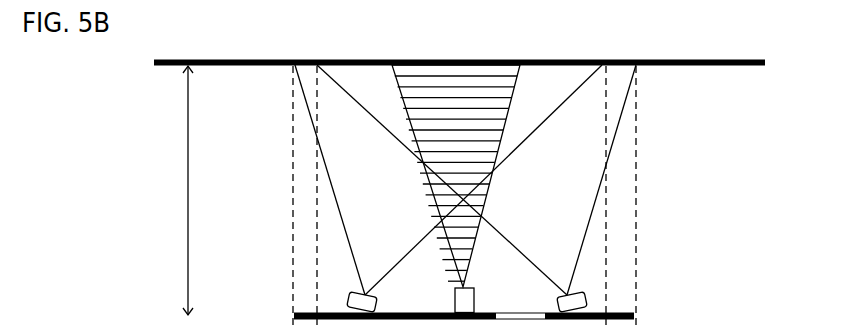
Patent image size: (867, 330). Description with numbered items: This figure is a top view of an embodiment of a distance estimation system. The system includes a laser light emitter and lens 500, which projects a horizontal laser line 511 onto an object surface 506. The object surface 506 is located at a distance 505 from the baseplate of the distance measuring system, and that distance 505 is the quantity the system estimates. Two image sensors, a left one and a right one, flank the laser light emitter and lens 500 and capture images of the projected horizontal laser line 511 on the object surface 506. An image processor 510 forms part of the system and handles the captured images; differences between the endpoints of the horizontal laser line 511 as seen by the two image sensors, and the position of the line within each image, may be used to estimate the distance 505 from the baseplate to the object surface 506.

The laser light emitter and lens 500 is at (453, 298).
The distance 505 is at (170, 190).
The object surface 506 is at (765, 61).
The image processor 510 is at (512, 312).
The horizontal laser line 511 is at (468, 60).